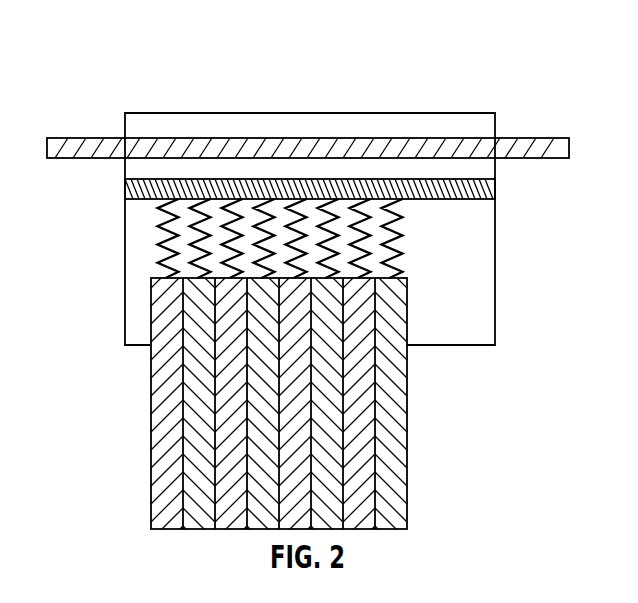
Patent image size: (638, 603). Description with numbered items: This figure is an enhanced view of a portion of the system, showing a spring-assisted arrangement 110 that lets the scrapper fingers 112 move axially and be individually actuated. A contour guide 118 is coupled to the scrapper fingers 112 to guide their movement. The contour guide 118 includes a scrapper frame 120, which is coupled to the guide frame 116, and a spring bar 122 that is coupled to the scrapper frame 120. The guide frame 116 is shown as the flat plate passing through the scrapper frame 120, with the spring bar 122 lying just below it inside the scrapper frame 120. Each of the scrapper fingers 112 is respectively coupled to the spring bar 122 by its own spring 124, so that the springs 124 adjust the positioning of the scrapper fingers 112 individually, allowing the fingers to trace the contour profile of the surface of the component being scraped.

The thermal management device 110 is at (128, 383).
The scrapper fingers 112 is at (393, 427).
The guide frame 116 is at (70, 138).
The contour guide 118 is at (416, 72).
The scrapper frame 120 is at (262, 113).
The spring bar 122 is at (125, 190).
The spring 124 is at (398, 246).